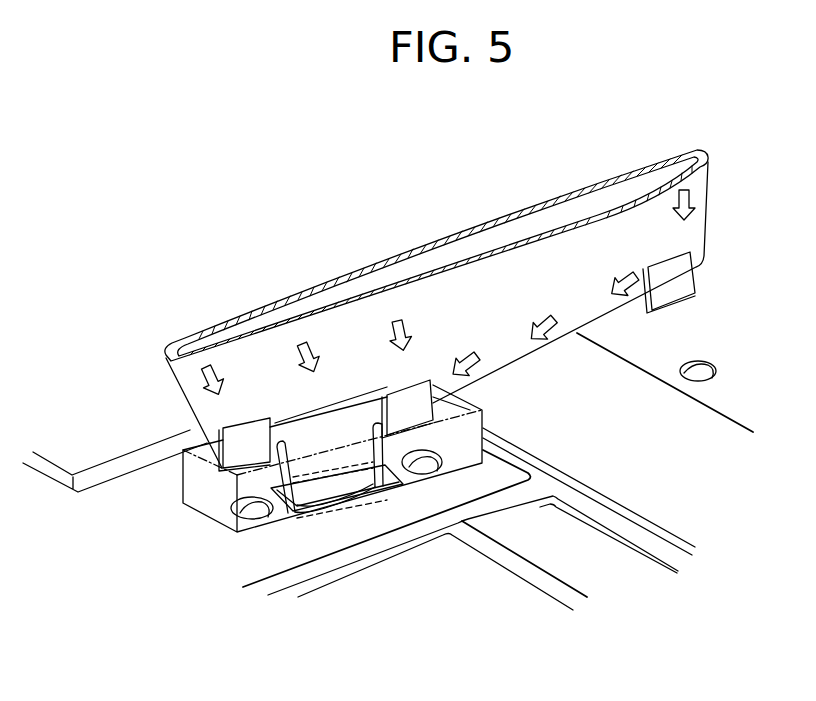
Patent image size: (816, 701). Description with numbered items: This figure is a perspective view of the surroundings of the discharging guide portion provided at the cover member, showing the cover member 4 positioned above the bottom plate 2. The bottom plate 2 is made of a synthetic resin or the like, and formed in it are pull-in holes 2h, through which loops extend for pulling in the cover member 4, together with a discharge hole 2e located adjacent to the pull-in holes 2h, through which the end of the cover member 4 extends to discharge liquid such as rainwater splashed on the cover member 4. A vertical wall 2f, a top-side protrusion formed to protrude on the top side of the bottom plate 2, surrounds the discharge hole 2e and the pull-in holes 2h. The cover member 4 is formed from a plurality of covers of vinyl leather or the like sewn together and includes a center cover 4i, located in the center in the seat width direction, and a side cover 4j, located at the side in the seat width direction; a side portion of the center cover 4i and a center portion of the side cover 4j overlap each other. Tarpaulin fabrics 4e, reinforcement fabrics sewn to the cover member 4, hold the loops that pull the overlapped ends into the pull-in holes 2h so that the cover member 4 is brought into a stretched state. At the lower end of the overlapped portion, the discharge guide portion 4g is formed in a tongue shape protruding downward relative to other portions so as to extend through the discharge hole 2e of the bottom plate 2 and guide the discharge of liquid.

The bottom plate 2 is at (595, 563).
The discharge hole 2e is at (383, 487).
The vertical wall 2f is at (215, 512).
The pull-in holes 2h is at (255, 507).
The cover member 4 is at (436, 285).
The tarpaulin fabrics 4e is at (237, 450).
The discharge guide portion 4g is at (330, 487).
The center cover 4i is at (467, 228).
The side cover 4j is at (512, 263).